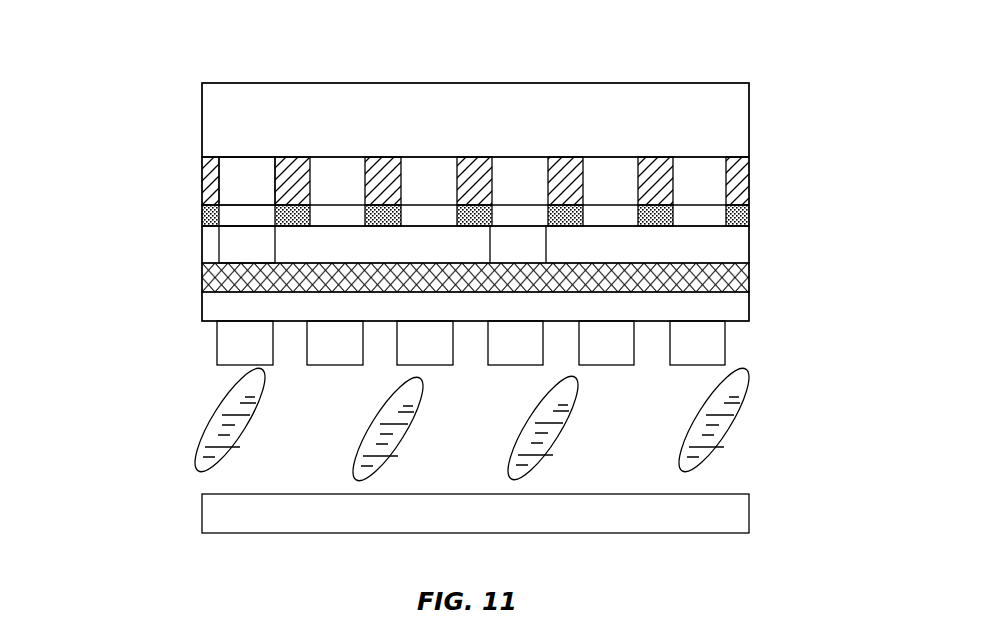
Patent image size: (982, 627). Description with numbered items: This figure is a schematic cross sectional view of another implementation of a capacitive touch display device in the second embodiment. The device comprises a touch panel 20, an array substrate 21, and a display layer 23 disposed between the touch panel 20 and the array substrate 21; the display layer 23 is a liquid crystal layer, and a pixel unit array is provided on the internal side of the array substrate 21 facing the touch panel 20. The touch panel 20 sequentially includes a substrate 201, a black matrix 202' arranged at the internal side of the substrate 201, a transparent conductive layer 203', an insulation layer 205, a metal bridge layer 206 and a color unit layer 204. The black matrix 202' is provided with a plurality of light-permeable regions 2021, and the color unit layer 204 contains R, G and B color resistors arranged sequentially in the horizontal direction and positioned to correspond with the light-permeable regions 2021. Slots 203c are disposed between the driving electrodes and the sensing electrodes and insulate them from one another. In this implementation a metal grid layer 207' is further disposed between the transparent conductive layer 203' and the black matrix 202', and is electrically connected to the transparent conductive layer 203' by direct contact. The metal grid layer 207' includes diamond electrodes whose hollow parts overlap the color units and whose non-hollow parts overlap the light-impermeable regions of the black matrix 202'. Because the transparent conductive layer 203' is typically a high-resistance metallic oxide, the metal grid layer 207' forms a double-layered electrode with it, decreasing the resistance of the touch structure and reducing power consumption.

The touch panel 20 is at (85, 67).
The substrate 201 is at (749, 120).
The light-permeable regions 2021 is at (252, 180).
The black matrix 202' is at (545, 178).
The metal grid layer 207' is at (420, 189).
The transparent conductive layer 203' is at (545, 239).
The slots 203c is at (238, 248).
The insulation layer 205 is at (749, 282).
The metal bridge layer 206 is at (749, 310).
The color unit layer 204 is at (725, 342).
The display layer 23 is at (150, 333).
The array substrate 21 is at (200, 535).